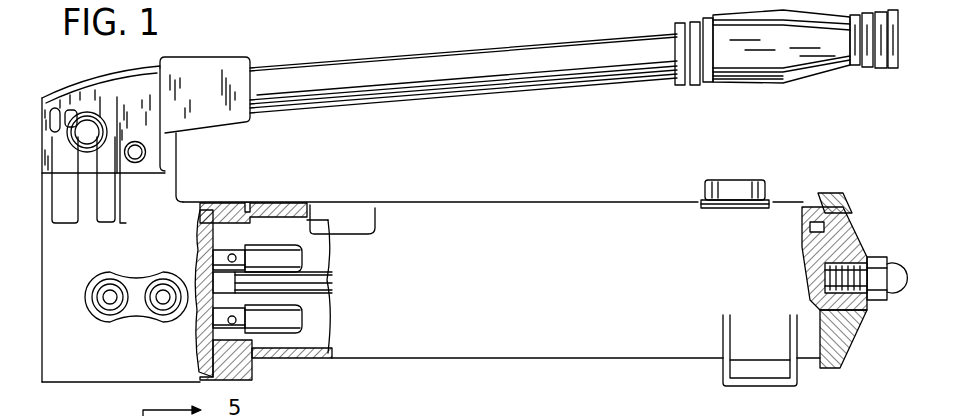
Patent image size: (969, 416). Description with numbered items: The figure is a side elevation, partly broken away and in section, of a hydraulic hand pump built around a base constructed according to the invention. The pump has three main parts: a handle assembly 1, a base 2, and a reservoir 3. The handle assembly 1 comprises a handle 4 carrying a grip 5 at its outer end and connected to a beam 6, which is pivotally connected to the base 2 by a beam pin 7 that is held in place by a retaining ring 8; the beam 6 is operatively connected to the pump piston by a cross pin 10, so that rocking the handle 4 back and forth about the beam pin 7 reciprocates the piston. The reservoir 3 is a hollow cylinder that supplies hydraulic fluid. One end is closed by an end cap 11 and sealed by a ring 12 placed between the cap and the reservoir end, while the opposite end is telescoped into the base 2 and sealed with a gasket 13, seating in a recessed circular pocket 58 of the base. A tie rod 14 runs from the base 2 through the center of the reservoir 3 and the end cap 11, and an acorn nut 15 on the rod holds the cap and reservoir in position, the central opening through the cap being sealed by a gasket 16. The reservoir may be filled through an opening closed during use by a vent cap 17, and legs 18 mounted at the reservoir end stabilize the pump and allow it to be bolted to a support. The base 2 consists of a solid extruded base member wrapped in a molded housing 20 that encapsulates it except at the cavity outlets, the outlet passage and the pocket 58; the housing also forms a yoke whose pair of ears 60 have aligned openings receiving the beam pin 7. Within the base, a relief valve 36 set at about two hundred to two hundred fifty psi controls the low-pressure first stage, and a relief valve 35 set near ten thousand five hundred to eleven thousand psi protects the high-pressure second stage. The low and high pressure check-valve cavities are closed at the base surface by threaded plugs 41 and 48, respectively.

The handle assembly 1 is at (273, 62).
The base 2 is at (187, 201).
The reservoir 3 is at (520, 202).
The handle 4 is at (468, 94).
The grip 5 is at (767, 82).
The beam 6 is at (220, 80).
The beam pin 7 is at (88, 128).
The retaining ring 8 is at (101, 128).
The cross pin 10 is at (142, 145).
The end cap 11 is at (853, 223).
The ring 12 is at (828, 193).
The gasket 13 is at (215, 203).
The tie rod 14 is at (330, 255).
The acorn nut 15 is at (893, 287).
The gasket 16 is at (867, 317).
The vent cap 17 is at (727, 180).
The legs 18 is at (722, 378).
The housing 20 is at (252, 373).
The safety or relief valve 35 is at (290, 322).
The safety or relief valve 36 is at (278, 246).
The threaded plug 41 is at (108, 303).
The threaded plug 48 is at (162, 303).
The recessed circular pocket 58 is at (199, 233).
The ears 60 is at (43, 108).